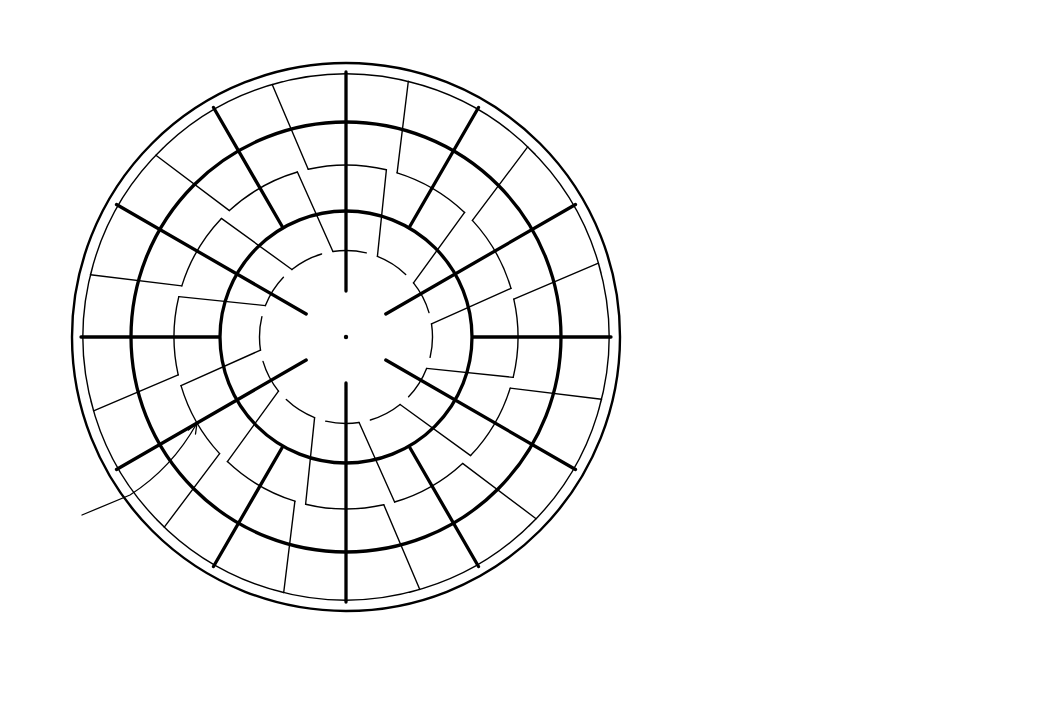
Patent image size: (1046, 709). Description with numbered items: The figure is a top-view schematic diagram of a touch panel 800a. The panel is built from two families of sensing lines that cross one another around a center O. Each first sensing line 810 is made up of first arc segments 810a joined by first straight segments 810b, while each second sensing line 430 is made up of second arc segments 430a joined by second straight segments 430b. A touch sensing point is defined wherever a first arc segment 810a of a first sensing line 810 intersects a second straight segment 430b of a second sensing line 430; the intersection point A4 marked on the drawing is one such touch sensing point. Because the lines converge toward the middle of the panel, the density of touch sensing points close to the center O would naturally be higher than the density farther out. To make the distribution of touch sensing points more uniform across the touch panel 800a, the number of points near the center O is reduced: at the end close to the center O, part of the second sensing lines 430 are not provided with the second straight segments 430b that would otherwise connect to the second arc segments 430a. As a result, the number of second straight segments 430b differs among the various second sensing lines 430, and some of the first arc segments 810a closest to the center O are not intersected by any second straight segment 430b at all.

The touch panel 800a is at (690, 588).
The first sensing line 810 is at (543, 10).
The first arc segment 810a is at (452, 93).
The first straight segment 810b is at (522, 193).
The second sensing line 430 is at (634, 115).
The second arc segment 430a is at (505, 197).
The second straight segment 430b is at (565, 218).
The center O is at (334, 343).
The intersection point A4 is at (122, 480).